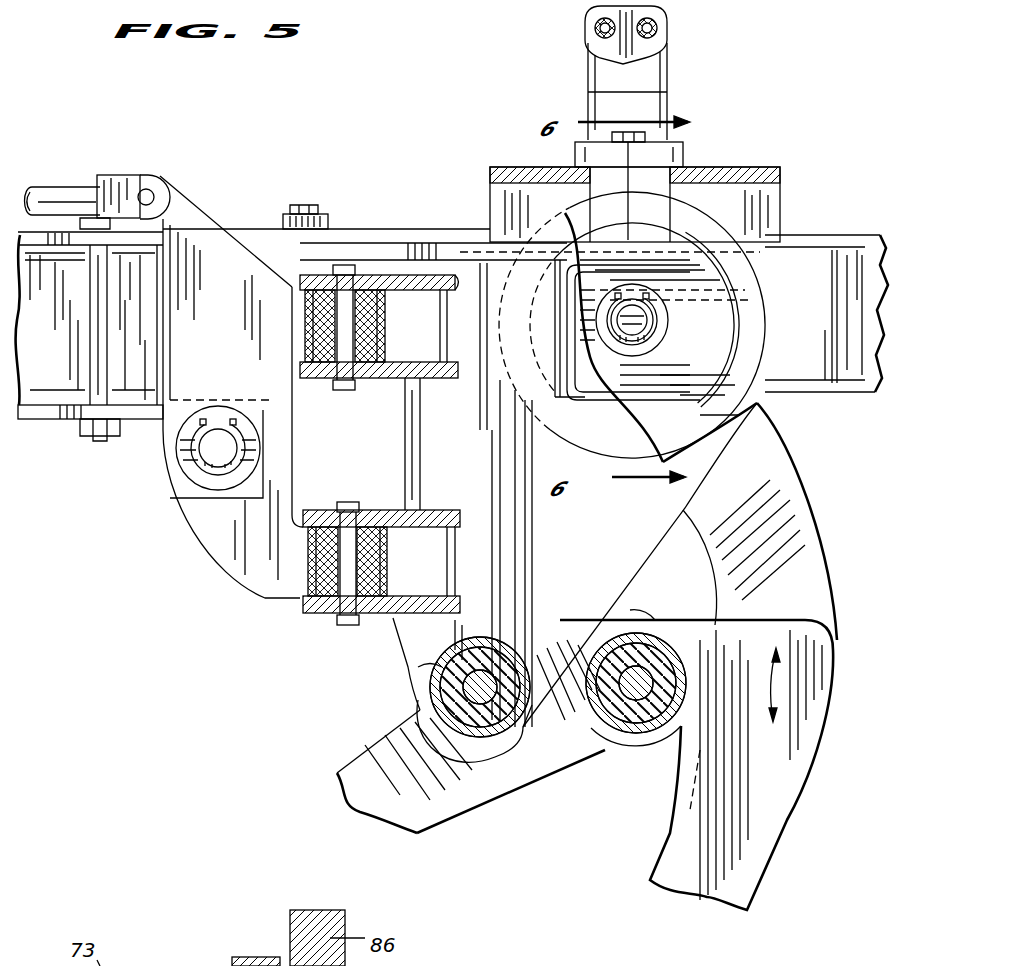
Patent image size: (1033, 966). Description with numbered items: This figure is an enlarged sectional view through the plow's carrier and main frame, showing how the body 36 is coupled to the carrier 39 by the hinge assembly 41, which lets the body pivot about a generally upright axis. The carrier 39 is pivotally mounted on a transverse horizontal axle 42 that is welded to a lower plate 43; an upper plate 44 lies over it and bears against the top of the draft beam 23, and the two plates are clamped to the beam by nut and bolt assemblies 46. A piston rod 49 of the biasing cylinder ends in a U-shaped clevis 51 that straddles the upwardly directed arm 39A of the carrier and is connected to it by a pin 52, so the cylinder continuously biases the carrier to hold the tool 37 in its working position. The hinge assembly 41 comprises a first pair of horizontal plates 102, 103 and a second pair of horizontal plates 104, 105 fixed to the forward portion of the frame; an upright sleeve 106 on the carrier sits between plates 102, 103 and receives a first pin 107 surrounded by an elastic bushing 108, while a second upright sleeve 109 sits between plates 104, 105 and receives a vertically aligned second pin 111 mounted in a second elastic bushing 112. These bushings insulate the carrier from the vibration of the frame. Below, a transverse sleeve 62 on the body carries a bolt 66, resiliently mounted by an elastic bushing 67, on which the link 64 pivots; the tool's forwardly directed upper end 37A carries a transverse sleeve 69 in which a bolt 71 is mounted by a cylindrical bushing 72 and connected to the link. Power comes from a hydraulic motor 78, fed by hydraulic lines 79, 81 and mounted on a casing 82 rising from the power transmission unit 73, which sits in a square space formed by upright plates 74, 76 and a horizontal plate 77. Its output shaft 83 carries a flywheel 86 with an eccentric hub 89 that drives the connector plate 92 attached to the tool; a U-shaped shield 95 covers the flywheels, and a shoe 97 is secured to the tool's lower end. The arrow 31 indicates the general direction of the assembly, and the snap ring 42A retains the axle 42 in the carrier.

The draft beam 23 is at (835, 250).
The arm assembly 31 is at (723, 90).
The body 36 is at (420, 437).
The tool 37 is at (742, 880).
The forwardly directed upper end 37A is at (708, 620).
The carrier 39 is at (235, 337).
The upwardly directed arm 39A is at (182, 218).
The hinge assembly 41 is at (395, 217).
The axle 42 is at (210, 455).
The snap ring 42A is at (218, 470).
The lower plate 43 is at (60, 422).
The upper plate 44 is at (314, 240).
The nut and bolt assemblies 46 is at (100, 315).
The piston rod 49 is at (55, 195).
The clevis 51 is at (113, 176).
The pin 52 is at (147, 196).
The transverse sleeve 62 is at (415, 633).
The link 64 is at (440, 810).
The bolt 66 is at (428, 668).
The elastic bushing 67 is at (498, 675).
The transverse sleeve 69 is at (655, 620).
The bolt 71 is at (660, 680).
The cylindrical bushing 72 is at (641, 722).
The power transmission unit 73 is at (580, 368).
The upright plate 74 is at (700, 352).
The upright plate 76 is at (560, 303).
The horizontal plate 77 is at (592, 420).
The hydraulic motor 78 is at (600, 71).
The hydraulic line 79 is at (598, 26).
The hydraulic line 81 is at (654, 26).
The casing 82 is at (650, 175).
The output shaft 83 is at (660, 300).
The flywheel 86 is at (730, 232).
The eccentric hub 89 is at (658, 318).
The connector plate 92 is at (800, 550).
The shield 95 is at (778, 688).
The shoe 97 is at (776, 170).
The horizontal plate 102 is at (462, 286).
The horizontal plate 103 is at (462, 382).
The horizontal plate 104 is at (470, 520).
The horizontal plate 105 is at (462, 602).
The upright sleeve 106 is at (368, 342).
The first pin 107 is at (345, 270).
The elastic bushing 108 is at (318, 343).
The second upright sleeve 109 is at (380, 578).
The second pin 111 is at (348, 504).
The elastic bushing 112 is at (325, 570).